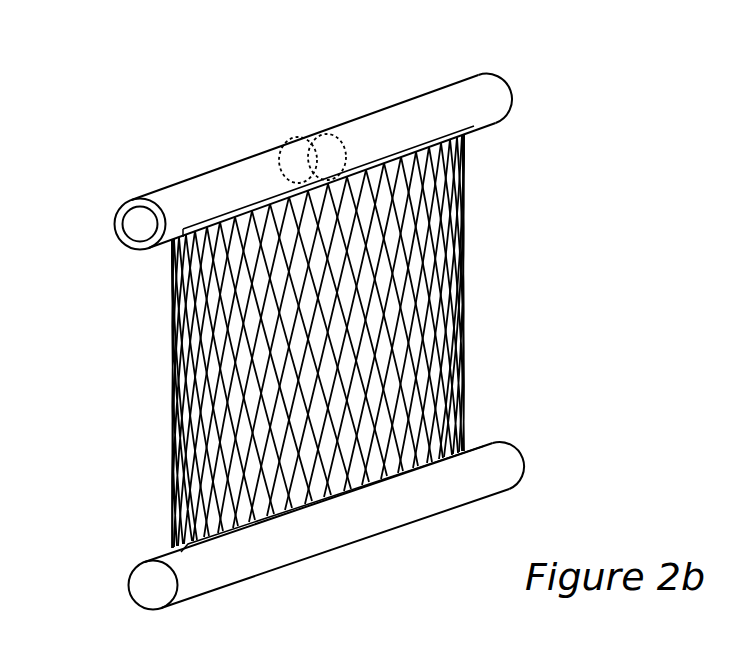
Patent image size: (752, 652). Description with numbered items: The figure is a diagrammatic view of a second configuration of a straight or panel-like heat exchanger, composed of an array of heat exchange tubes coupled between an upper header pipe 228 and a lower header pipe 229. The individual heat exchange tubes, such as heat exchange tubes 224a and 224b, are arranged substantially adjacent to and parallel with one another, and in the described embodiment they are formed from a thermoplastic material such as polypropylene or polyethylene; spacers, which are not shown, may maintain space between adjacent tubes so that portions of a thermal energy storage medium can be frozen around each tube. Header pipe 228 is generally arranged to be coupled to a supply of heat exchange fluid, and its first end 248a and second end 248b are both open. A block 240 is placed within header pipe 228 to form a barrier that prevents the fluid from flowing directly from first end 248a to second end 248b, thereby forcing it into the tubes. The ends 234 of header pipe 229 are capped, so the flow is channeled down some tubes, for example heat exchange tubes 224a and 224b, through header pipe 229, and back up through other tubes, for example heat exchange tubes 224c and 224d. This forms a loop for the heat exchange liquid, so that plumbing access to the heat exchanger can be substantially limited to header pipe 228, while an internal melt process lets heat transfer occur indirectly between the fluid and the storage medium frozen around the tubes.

The header pipe 228 is at (482, 89).
The header pipe 229 is at (343, 547).
The ends 234 is at (525, 458).
The block 240 is at (322, 150).
The first end 248a is at (117, 228).
The second end 248b is at (512, 98).
The heat exchange tube 224a is at (180, 420).
The heat exchange tube 224b is at (192, 374).
The heat exchange tube 224c is at (466, 246).
The heat exchange tube 224d is at (467, 322).